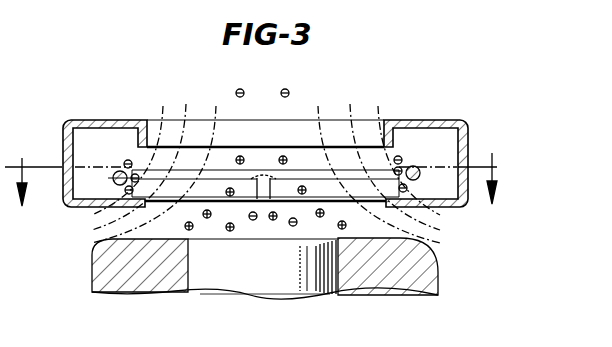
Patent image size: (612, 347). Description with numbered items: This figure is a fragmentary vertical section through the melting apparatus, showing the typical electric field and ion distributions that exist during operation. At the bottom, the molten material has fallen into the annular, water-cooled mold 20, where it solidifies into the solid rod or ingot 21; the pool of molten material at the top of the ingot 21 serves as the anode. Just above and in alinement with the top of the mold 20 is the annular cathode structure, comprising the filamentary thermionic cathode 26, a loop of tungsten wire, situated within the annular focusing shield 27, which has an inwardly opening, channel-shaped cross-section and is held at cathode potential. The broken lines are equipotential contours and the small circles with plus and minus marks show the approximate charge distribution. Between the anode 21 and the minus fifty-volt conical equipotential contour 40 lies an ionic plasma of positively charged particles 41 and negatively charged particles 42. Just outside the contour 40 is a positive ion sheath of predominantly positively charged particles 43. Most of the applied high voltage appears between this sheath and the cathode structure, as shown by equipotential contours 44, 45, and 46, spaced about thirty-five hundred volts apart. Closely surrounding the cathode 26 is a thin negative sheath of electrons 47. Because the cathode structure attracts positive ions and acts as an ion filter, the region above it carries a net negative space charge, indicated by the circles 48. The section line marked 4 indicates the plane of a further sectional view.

The section line 4- 4 is at (253, 190).
The mold 20 is at (439, 266).
The ingot 21 is at (288, 284).
The filamentary thermionic cathode 26 is at (420, 175).
The focusing shield 27 is at (440, 119).
The equipotential contour 40 is at (244, 183).
The positively charged particles 41 is at (230, 231).
The negatively charged particles 42 is at (253, 221).
The positively charged particles 43 is at (241, 156).
The equipotential contour 44 is at (216, 106).
The equipotential contour 45 is at (186, 104).
The equipotential contour 46 is at (163, 107).
The electrons 47 is at (128, 160).
The circles 48 is at (241, 89).